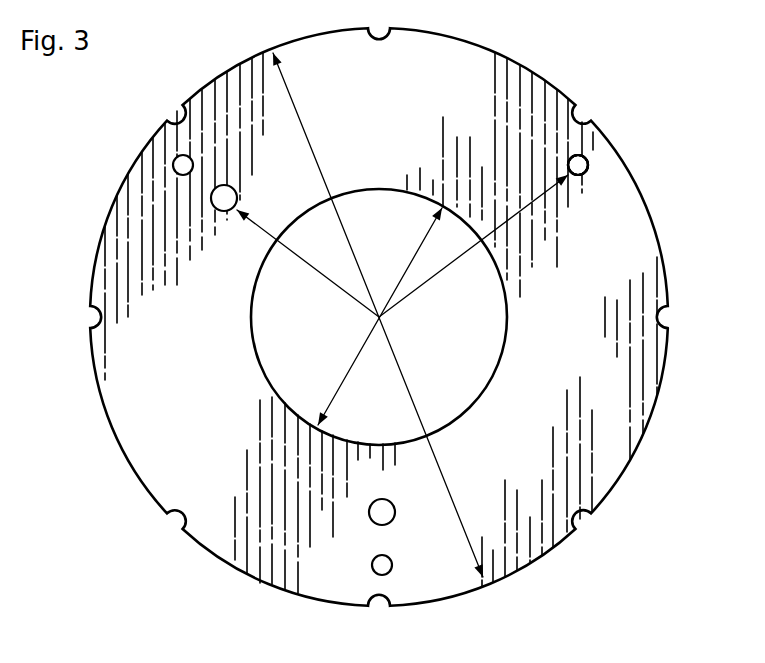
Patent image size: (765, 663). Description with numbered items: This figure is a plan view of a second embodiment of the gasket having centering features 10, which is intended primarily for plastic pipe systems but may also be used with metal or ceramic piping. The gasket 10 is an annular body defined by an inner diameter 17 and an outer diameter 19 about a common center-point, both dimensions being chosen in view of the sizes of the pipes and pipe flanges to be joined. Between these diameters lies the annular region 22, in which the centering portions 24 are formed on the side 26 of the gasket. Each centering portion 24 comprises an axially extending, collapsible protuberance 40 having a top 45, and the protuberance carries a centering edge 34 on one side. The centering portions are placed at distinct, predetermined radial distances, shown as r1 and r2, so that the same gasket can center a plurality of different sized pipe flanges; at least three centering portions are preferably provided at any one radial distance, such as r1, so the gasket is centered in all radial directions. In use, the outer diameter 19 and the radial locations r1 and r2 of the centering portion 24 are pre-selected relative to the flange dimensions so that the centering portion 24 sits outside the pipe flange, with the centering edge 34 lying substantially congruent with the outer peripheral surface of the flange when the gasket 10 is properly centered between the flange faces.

The gasket having centering features 10 is at (634, 46).
The inner diameter 17 is at (336, 391).
The outer diameter 19 is at (362, 268).
The annular region 22 is at (585, 240).
The centering portion 24 is at (184, 211).
The side of the gasket 26 is at (600, 462).
The centering edge 34 is at (240, 203).
The collapsible protuberance 40 is at (597, 158).
The top of the protuberance 45 is at (583, 173).
The radial distance r1 is at (293, 255).
The radial distance r2 is at (440, 272).